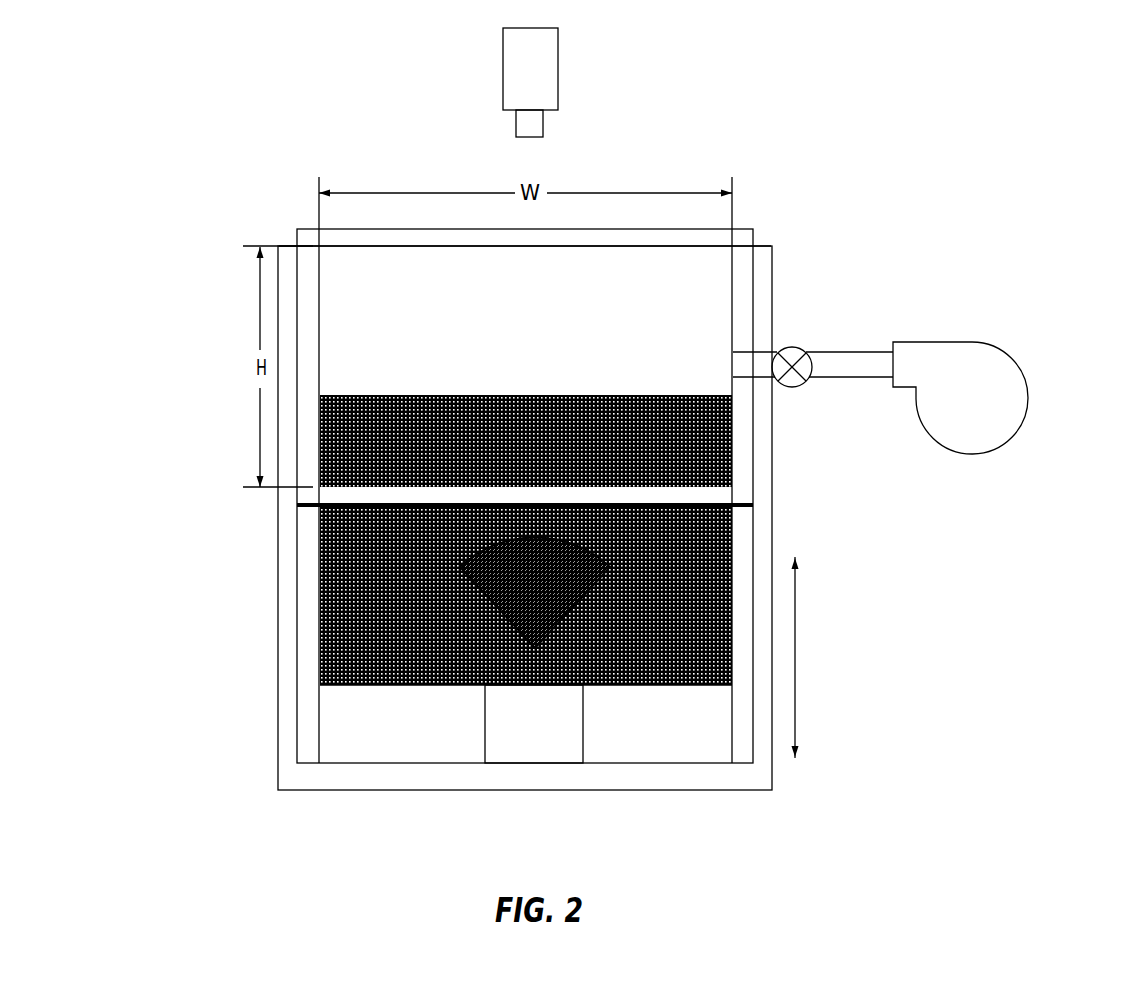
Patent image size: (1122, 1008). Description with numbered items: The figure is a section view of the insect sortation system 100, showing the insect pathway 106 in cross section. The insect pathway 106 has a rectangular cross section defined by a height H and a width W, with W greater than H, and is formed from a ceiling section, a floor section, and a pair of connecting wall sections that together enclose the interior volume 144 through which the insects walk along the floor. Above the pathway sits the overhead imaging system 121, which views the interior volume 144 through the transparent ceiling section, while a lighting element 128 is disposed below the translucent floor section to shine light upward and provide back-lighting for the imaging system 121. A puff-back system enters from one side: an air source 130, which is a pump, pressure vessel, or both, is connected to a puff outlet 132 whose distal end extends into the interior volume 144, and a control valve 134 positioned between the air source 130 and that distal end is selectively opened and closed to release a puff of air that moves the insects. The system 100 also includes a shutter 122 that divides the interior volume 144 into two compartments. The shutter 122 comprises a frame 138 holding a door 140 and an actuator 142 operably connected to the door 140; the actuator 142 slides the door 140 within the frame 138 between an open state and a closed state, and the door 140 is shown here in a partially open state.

The insect sortation system 100 is at (211, 103).
The insect pathway 106 is at (700, 295).
The imaging system 121 is at (558, 40).
The shutter 122 is at (226, 368).
The lighting element 128 is at (590, 590).
The air source 130 is at (1022, 402).
The puff outlet 132 is at (768, 377).
The control valve 134 is at (799, 348).
The frame 138 is at (717, 780).
The door 140 is at (350, 573).
The actuator 142 is at (550, 734).
The interior volume 144 is at (555, 342).